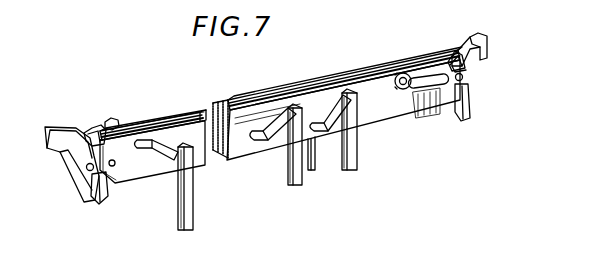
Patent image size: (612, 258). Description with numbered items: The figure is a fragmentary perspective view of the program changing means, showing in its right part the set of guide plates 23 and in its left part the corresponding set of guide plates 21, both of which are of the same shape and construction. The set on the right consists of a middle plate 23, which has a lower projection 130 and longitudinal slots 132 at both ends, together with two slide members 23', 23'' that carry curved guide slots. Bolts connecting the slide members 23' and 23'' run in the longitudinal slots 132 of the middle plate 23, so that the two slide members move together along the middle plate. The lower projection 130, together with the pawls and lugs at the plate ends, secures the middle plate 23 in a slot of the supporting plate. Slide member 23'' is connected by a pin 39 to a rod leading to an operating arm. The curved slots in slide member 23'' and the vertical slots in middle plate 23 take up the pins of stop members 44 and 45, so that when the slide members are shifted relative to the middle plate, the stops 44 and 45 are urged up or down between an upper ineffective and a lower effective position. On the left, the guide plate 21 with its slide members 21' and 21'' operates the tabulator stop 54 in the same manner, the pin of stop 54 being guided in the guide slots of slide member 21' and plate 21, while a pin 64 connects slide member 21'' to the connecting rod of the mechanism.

The guide plate 21 is at (153, 149).
The slide member 21' is at (152, 163).
The slide member 21'' is at (153, 110).
The middle plate 23 is at (337, 94).
The slide member 23' is at (337, 94).
The slide member 23'' is at (343, 110).
The pin 39 is at (403, 72).
The stop member 44 is at (288, 176).
The stop member 45 is at (357, 162).
The tabulator stop 54 is at (191, 208).
The pin 64 is at (112, 119).
The lower projection 130 is at (313, 172).
The longitudinal slots 132 is at (442, 89).